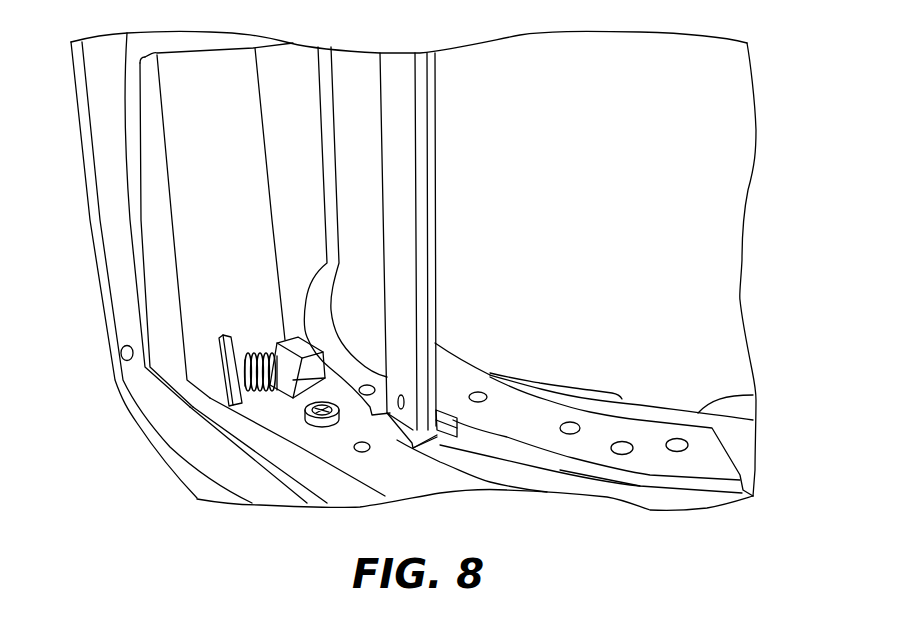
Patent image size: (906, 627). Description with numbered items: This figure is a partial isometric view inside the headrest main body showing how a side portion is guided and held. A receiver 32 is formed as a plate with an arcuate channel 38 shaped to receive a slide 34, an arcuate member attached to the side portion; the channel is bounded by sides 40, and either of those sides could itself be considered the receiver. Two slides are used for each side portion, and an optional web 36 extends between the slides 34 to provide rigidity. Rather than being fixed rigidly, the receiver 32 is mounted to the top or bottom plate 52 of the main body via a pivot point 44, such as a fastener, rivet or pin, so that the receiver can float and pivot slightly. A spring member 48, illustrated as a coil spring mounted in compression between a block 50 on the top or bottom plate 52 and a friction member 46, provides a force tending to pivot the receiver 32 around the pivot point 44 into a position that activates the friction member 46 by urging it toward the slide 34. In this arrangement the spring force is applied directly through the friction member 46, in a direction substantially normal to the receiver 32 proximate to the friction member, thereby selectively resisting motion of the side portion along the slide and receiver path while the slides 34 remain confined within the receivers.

The receiver 32 is at (520, 408).
The slide 34 is at (452, 428).
The web 36 is at (404, 234).
The arcuate channel 38 is at (545, 482).
The side 40 is at (573, 387).
The pivot point 44 is at (305, 410).
The friction member 46 is at (298, 338).
The spring member 48 is at (247, 353).
The block 50 is at (220, 333).
The top or bottom plate 52 is at (300, 477).